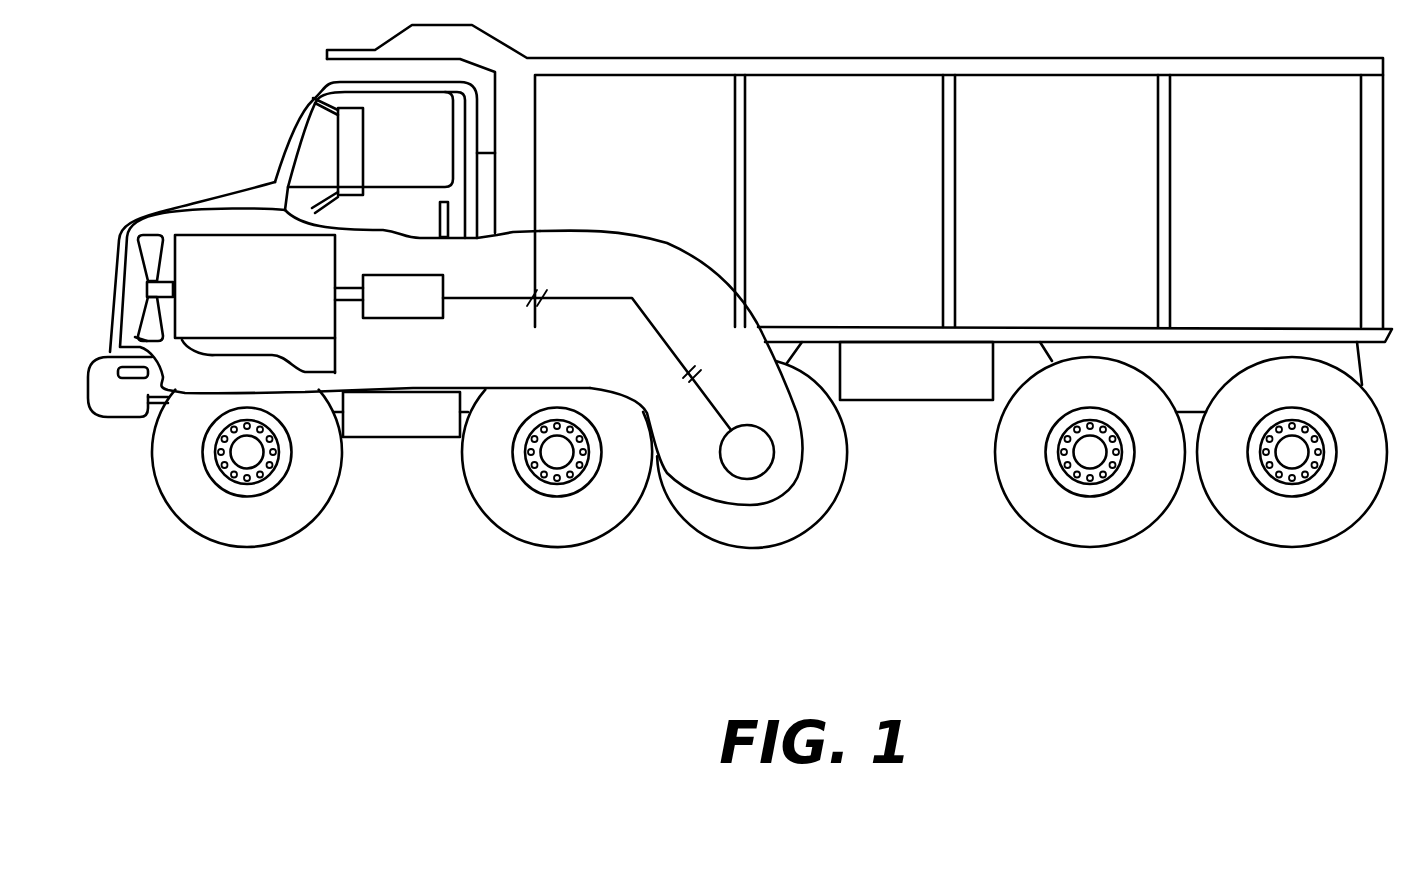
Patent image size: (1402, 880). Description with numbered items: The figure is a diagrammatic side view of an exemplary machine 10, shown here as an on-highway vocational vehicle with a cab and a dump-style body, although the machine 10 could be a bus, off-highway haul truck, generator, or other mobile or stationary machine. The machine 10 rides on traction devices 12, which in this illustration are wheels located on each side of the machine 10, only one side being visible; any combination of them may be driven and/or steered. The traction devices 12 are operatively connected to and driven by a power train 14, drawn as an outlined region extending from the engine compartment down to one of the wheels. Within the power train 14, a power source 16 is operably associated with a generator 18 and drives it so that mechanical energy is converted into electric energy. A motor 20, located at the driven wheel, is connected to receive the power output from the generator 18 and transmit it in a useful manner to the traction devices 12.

The machine 10 is at (217, 155).
The traction device 12 is at (757, 538).
The power train 14 is at (520, 278).
The power source 16 is at (272, 299).
The generator 18 is at (421, 312).
The motor 20 is at (730, 466).